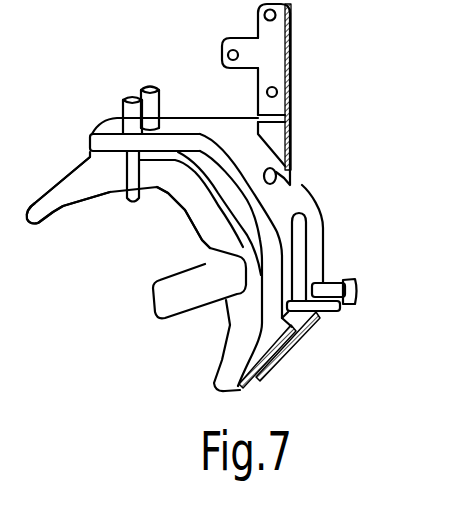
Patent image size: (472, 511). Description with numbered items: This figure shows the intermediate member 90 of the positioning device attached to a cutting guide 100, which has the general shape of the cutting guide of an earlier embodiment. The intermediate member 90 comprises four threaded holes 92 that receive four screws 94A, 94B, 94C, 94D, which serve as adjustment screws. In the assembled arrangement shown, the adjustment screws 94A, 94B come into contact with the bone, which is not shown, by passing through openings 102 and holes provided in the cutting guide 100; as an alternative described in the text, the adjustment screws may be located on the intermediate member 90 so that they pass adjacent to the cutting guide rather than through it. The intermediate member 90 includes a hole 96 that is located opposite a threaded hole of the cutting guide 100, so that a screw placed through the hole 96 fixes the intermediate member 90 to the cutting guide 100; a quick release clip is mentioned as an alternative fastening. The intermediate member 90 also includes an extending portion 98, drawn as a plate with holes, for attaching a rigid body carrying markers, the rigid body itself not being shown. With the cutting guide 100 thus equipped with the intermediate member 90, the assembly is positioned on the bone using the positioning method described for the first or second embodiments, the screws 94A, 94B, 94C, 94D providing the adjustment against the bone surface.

The intermediate member 90 is at (305, 195).
The threaded holes 92 is at (165, 125).
The screw 94A is at (323, 312).
The screw 94B is at (333, 282).
The screw 94C is at (120, 112).
The screw 94D is at (160, 97).
The hole 96 is at (290, 151).
The extending portion 98 is at (283, 48).
The cutting guide 100 is at (190, 214).
The openings 102 is at (117, 190).